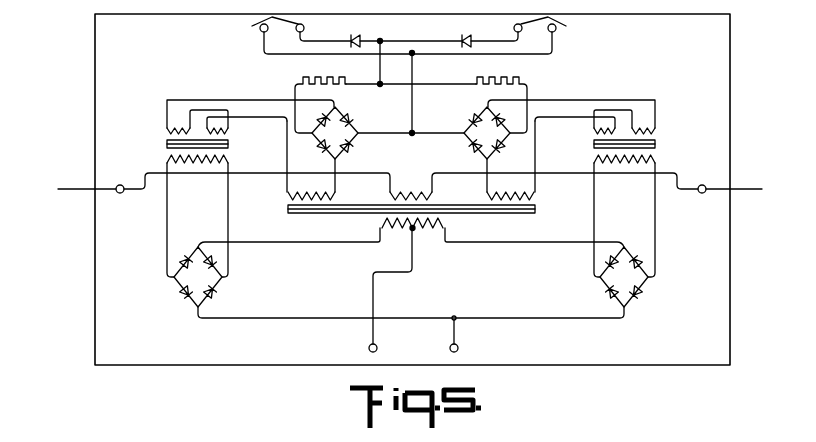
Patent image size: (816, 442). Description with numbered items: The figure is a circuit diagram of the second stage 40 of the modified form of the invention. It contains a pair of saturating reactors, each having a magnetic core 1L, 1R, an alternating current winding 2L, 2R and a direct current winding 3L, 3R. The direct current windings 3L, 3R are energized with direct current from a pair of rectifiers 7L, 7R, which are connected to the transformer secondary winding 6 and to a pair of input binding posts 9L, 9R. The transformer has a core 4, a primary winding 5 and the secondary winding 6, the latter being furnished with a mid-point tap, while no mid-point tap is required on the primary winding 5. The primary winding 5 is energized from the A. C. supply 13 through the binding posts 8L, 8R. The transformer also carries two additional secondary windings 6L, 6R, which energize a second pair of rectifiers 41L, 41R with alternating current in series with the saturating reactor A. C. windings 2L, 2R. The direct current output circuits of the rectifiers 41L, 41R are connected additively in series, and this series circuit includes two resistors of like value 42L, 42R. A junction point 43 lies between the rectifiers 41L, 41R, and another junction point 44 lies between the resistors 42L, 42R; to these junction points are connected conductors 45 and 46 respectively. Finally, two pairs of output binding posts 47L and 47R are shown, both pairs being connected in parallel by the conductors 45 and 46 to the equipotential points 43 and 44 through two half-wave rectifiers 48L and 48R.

The second stage 40 is at (769, 35).
The A. C. supply 13 is at (412, 184).
The binding post 8L is at (117, 200).
The binding post 8R is at (700, 200).
The input binding post 9L is at (354, 351).
The input binding post 9R is at (469, 351).
The output binding posts 47L is at (258, 28).
The output binding posts 47R is at (566, 26).
The half-wave rectifier 48L is at (353, 31).
The half-wave rectifier 48R is at (465, 31).
The conductor 46 is at (379, 65).
The junction point 44 is at (411, 93).
The conductor 45 is at (413, 104).
The junction point 43 is at (410, 132).
The resistor 42L is at (320, 97).
The resistor 42R is at (501, 97).
The alternating current winding 2L is at (250, 107).
The alternating current winding 2R is at (571, 107).
The magnetic core 1L is at (183, 143).
The magnetic core 1R is at (639, 143).
The direct current winding 3L is at (210, 164).
The direct current winding 3R is at (607, 164).
The rectifier 41L is at (345, 139).
The rectifier 41R is at (473, 139).
The secondary winding 6L is at (311, 188).
The primary winding 5 is at (411, 188).
The secondary winding 6R is at (510, 188).
The core 4 is at (420, 214).
The secondary winding 6 is at (412, 236).
The rectifier 7L is at (187, 281).
The rectifier 7R is at (634, 281).